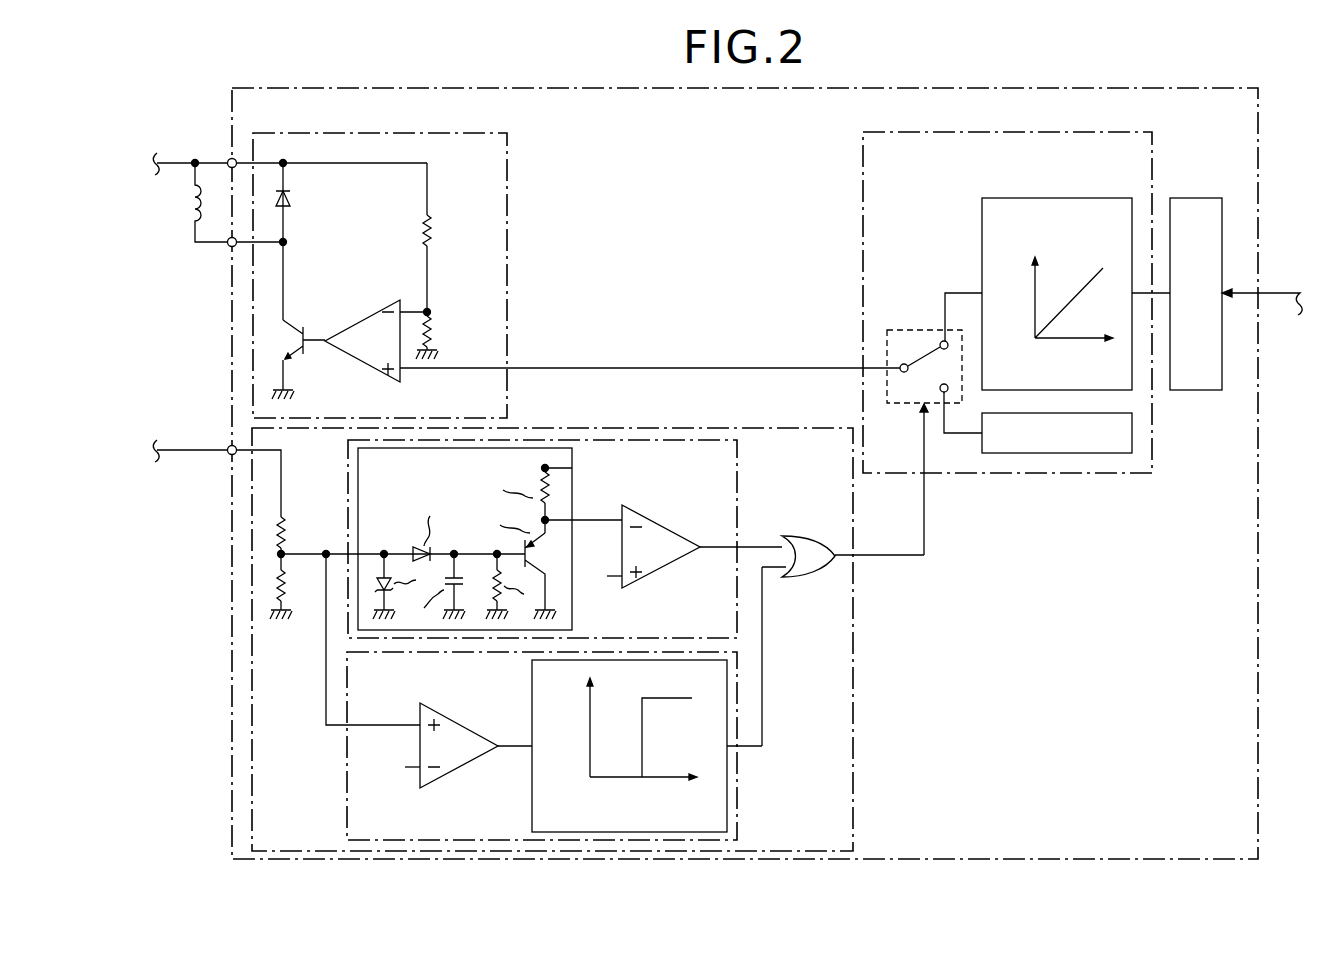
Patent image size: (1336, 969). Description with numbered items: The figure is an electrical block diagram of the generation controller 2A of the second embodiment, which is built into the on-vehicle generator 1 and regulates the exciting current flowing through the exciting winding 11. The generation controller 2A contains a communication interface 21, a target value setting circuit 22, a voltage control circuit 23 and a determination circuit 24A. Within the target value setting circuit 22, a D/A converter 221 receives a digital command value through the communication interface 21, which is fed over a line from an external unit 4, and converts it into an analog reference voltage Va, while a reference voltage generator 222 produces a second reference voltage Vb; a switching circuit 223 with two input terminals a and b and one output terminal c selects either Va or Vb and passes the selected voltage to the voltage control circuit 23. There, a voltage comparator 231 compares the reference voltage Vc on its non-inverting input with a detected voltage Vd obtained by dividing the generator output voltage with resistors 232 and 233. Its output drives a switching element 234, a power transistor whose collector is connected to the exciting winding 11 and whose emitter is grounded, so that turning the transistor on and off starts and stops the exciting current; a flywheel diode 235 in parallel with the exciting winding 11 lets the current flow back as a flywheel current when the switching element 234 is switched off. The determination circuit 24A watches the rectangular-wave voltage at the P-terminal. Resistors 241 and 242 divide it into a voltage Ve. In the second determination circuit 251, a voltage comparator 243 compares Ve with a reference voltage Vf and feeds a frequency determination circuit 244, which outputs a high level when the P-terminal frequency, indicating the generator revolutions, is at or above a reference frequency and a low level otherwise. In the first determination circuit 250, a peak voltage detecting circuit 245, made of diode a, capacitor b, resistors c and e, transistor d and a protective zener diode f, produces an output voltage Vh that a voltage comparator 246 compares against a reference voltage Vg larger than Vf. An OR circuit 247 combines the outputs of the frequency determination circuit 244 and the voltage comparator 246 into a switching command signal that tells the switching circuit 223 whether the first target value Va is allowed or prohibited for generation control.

The on-vehicle generator 1 is at (180, 94).
The generation controller 2A is at (1258, 712).
The external control unit (ECU) 4 is at (1280, 293).
The exciting winding 11 is at (184, 201).
The communication interface 21 is at (1216, 186).
The target value setting circuit 22 is at (1010, 132).
The voltage control circuit 23 is at (392, 133).
The determination circuit 24A is at (853, 647).
The D/A converter 221 is at (1078, 186).
The reference voltage generator 222 is at (1132, 436).
The switching circuit 223 is at (906, 330).
The voltage comparator 231 is at (375, 298).
The resistor 232 is at (434, 228).
The resistor 233 is at (434, 330).
The switching element 234 is at (290, 322).
The flywheel diode 235 is at (292, 199).
The resistor 241 is at (290, 520).
The resistor 242 is at (292, 584).
The voltage comparator 243 is at (478, 742).
The frequency determination circuit 244 is at (532, 678).
The peak voltage detecting circuit 245 is at (572, 468).
The voltage comparator 246 is at (668, 522).
The OR circuit 247 is at (797, 577).
The first determination circuit 250 is at (737, 487).
The second determination circuit 251 is at (737, 785).